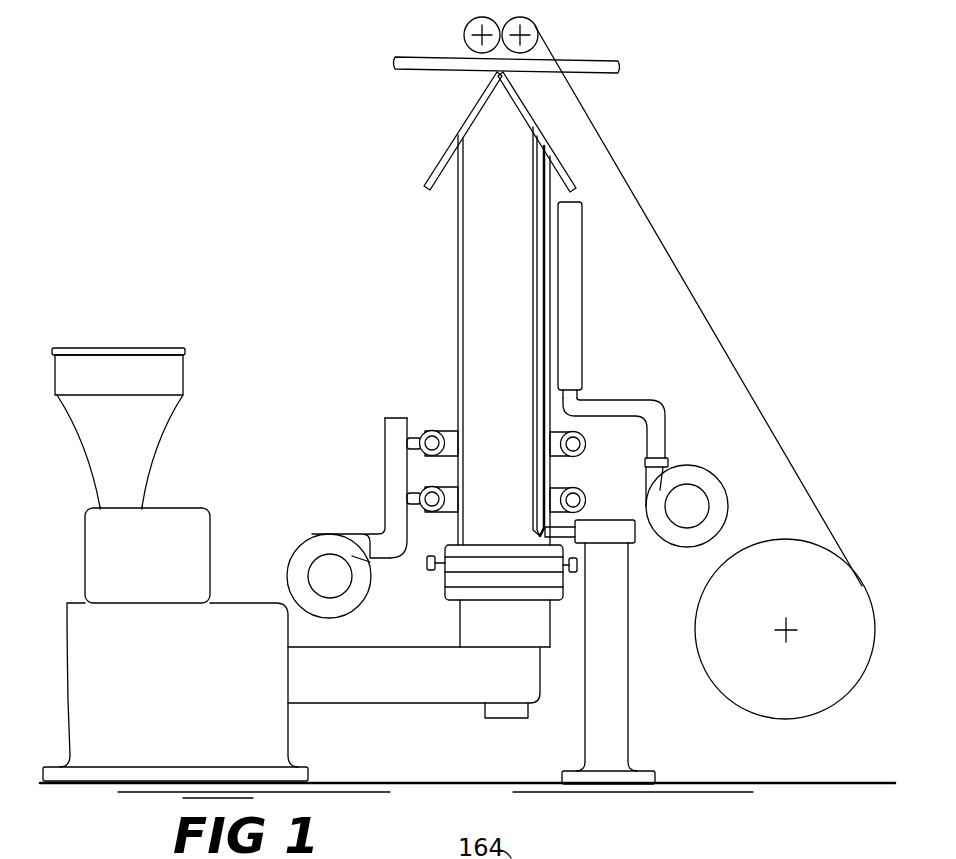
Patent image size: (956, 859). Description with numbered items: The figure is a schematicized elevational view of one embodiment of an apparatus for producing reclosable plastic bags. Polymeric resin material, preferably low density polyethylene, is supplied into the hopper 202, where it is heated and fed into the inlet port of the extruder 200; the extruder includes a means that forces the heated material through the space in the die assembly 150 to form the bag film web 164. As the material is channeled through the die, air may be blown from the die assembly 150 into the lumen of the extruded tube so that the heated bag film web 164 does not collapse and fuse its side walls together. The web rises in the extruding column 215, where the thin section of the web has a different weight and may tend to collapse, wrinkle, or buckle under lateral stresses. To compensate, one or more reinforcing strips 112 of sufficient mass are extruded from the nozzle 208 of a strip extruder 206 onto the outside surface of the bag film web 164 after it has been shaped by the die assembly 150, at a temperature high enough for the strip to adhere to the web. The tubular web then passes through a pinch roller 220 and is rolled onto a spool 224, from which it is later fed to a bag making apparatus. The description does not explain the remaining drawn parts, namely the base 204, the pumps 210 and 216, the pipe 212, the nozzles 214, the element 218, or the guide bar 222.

The reinforcing strip 112 is at (531, 243).
The die assembly 150 is at (472, 566).
The bag film web 164 is at (512, 489).
The extruder 200 is at (326, 398).
The hopper 202 is at (137, 368).
The base 204 is at (432, 683).
The extruder 206 is at (602, 628).
The nozzle 208 is at (541, 544).
The pump 210 is at (313, 539).
The supply pipe 212 is at (392, 463).
The nozzles 214 is at (437, 431).
The extruding column 215 is at (470, 302).
The pump 216 is at (692, 472).
The heater 218 is at (577, 368).
The pinch roller 220 is at (534, 27).
The guide bar 222 is at (607, 62).
The spool 224 is at (798, 560).